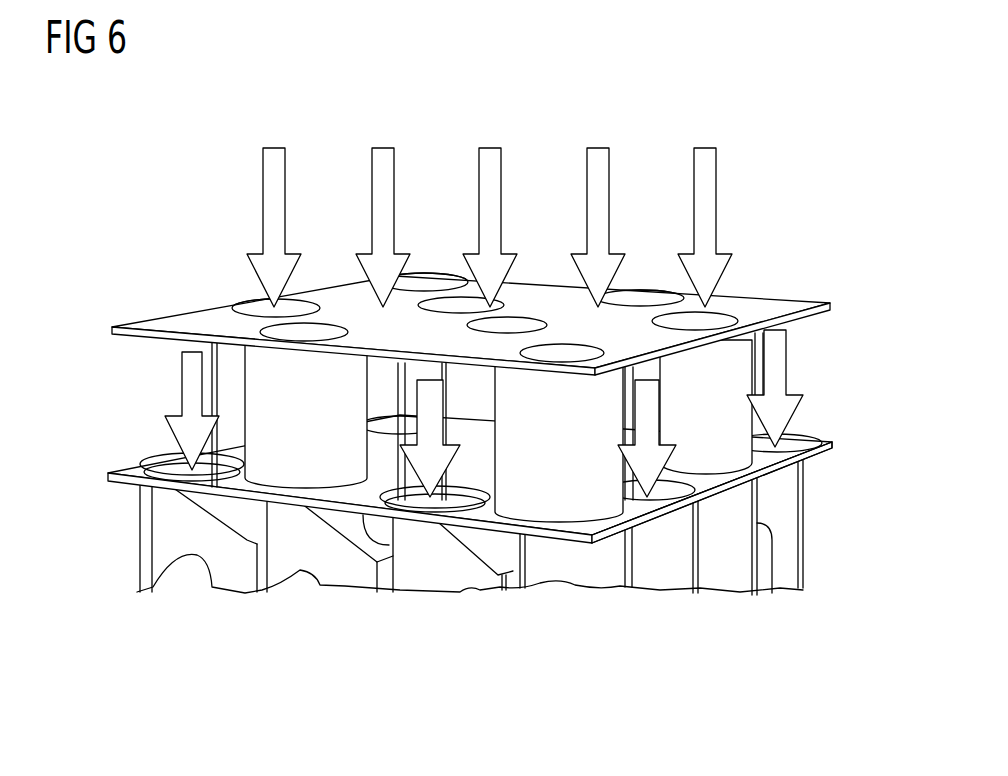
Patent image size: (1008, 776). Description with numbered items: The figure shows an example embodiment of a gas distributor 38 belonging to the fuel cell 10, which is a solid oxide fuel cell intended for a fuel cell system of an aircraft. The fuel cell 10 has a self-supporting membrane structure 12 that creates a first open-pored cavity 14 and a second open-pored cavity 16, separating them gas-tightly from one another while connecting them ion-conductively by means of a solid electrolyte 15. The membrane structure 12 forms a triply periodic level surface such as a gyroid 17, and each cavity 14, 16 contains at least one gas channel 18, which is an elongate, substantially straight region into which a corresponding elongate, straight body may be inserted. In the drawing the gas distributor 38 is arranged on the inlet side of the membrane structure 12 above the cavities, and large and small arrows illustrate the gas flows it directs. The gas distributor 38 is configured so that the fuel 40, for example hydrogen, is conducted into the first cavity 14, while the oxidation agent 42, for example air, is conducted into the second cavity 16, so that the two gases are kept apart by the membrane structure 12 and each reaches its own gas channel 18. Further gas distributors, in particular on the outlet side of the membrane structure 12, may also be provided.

The fuel cell 10 is at (171, 161).
The membrane structure 12 is at (111, 550).
The first open-pored cavity 14 is at (120, 455).
The solid electrolyte 15 is at (268, 587).
The second open-pored cavity 16 is at (551, 594).
The gyroid 17 is at (838, 462).
The gas channel 18 is at (558, 335).
The gas distributor 38 is at (154, 304).
The fuel 40 is at (180, 385).
The oxidation agent 42 is at (276, 148).